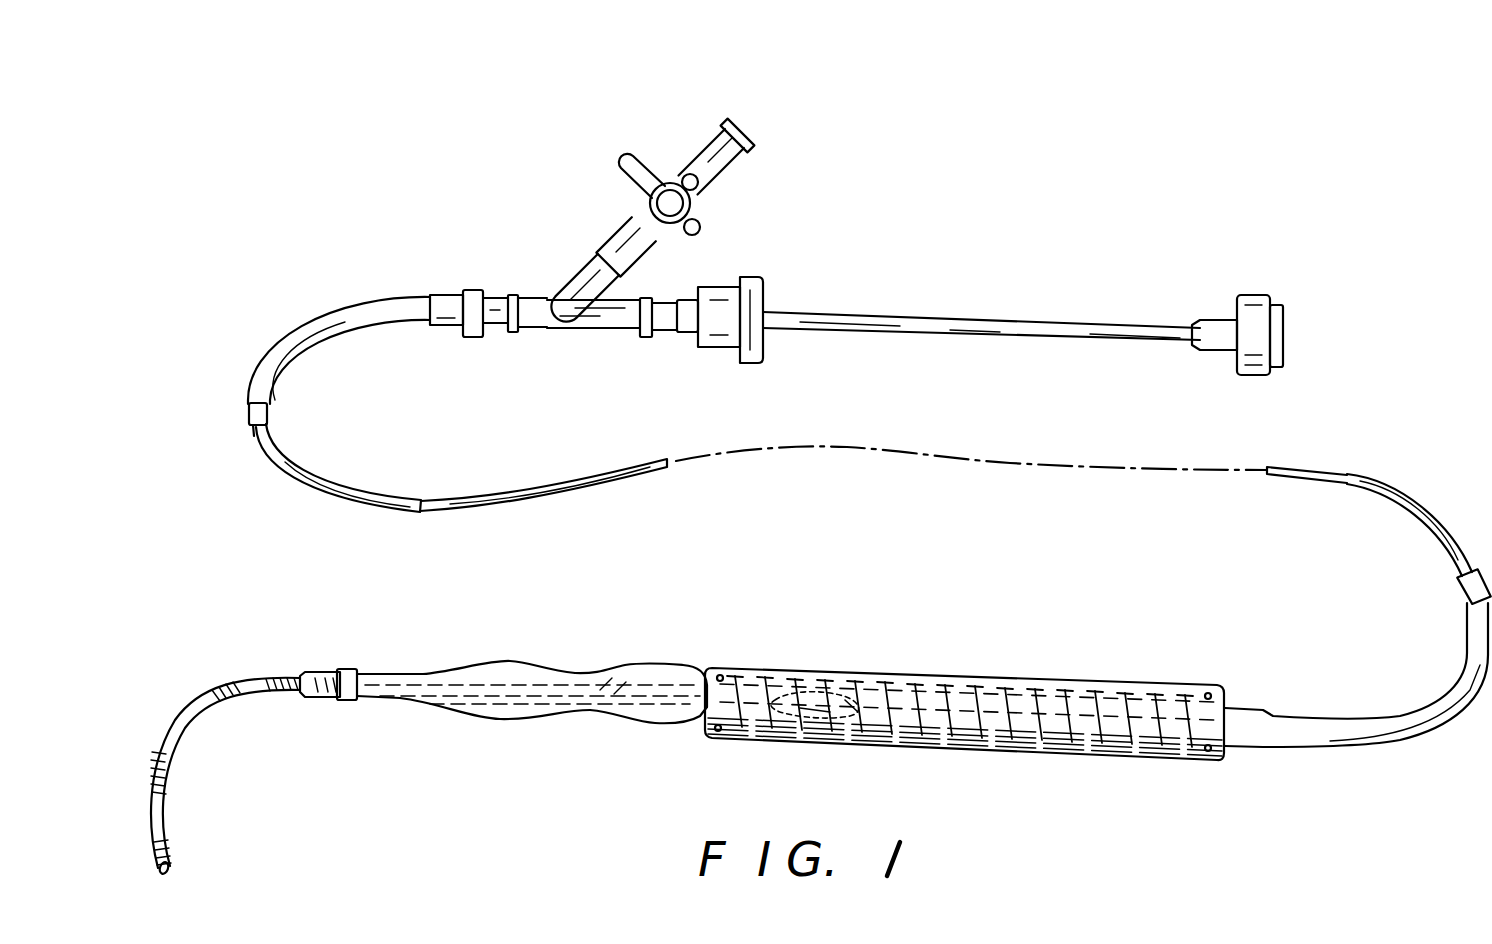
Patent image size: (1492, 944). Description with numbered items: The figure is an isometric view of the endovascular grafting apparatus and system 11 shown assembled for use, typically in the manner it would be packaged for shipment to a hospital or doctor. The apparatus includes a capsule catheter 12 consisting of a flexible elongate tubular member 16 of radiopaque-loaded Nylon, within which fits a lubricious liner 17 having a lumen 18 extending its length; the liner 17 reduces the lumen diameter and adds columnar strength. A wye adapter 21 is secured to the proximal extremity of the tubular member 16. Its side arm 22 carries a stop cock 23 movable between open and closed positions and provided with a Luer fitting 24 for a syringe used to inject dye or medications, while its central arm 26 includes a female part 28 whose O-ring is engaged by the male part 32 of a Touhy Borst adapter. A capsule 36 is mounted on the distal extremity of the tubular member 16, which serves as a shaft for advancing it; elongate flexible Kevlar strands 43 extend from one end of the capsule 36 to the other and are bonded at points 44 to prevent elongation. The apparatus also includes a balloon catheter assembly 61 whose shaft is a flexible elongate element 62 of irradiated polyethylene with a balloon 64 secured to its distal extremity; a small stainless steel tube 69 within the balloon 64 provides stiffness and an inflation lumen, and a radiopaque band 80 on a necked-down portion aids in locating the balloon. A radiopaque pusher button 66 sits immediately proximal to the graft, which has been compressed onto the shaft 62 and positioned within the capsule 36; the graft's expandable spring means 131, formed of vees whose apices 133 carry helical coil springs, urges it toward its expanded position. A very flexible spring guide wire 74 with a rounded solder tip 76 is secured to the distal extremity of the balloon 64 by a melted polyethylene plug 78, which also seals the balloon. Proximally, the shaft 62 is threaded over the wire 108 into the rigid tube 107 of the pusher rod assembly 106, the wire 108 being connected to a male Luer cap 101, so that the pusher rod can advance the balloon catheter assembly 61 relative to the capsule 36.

The endovascular grafting apparatus and system 11 is at (608, 159).
The capsule catheter 12 is at (262, 350).
The flexible elongate tubular member 16 is at (360, 308).
The liner 17 is at (264, 420).
The lumen 18 is at (254, 437).
The wye adapter 21 is at (604, 242).
The side arm 22 is at (580, 290).
The stop cock 23 is at (628, 165).
The Luer fitting 24 is at (722, 128).
The central arm 26 is at (586, 345).
The female part 28 is at (690, 345).
The male part 32 is at (747, 265).
The capsule 36 is at (1115, 768).
The elongate flexible strands 43 is at (943, 676).
The bonding points 44 is at (718, 672).
The balloon catheter assembly 61 is at (600, 728).
The flexible elongate element 62 is at (300, 476).
The balloon 64 is at (520, 662).
The pusher button 66 is at (852, 716).
The stainless steel tube 69 is at (642, 690).
The guide wire 74 is at (168, 795).
The rounded tip 76 is at (170, 873).
The plug 78 is at (312, 698).
The radiopaque band 80 is at (346, 668).
The male Luer cap 101 is at (1284, 316).
The pusher rod assembly 106 is at (1028, 312).
The rigid tube 107 is at (883, 318).
The wire 108 is at (515, 500).
The expandable spring means 131 is at (812, 688).
The apices 133 is at (826, 722).